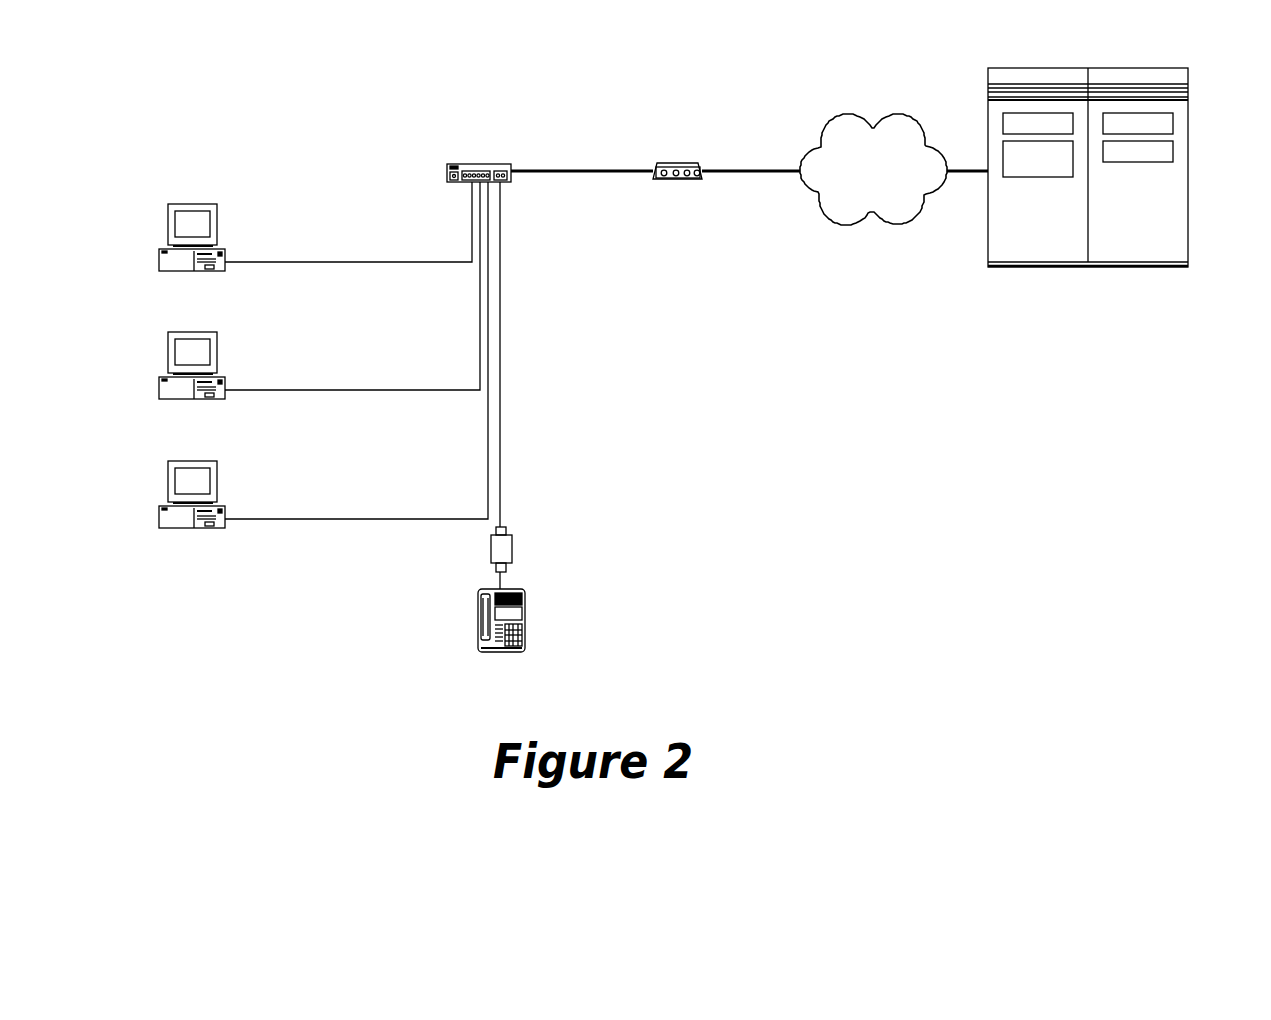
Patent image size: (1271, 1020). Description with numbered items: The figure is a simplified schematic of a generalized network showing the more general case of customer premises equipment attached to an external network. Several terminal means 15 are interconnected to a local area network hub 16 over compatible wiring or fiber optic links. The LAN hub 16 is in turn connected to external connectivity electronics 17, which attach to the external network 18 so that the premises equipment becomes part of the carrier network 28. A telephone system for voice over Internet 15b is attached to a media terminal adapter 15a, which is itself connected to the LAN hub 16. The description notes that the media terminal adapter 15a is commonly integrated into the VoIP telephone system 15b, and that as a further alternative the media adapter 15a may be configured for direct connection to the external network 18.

The terminal means 15 is at (173, 229).
The media terminal adapter 15a is at (512, 552).
The telephone system for voice over Internet 15b is at (525, 622).
The local area network hub 16 is at (483, 164).
The external connectivity electronics 17 is at (672, 162).
The external network 18 is at (873, 169).
The carrier network 28 is at (1188, 200).